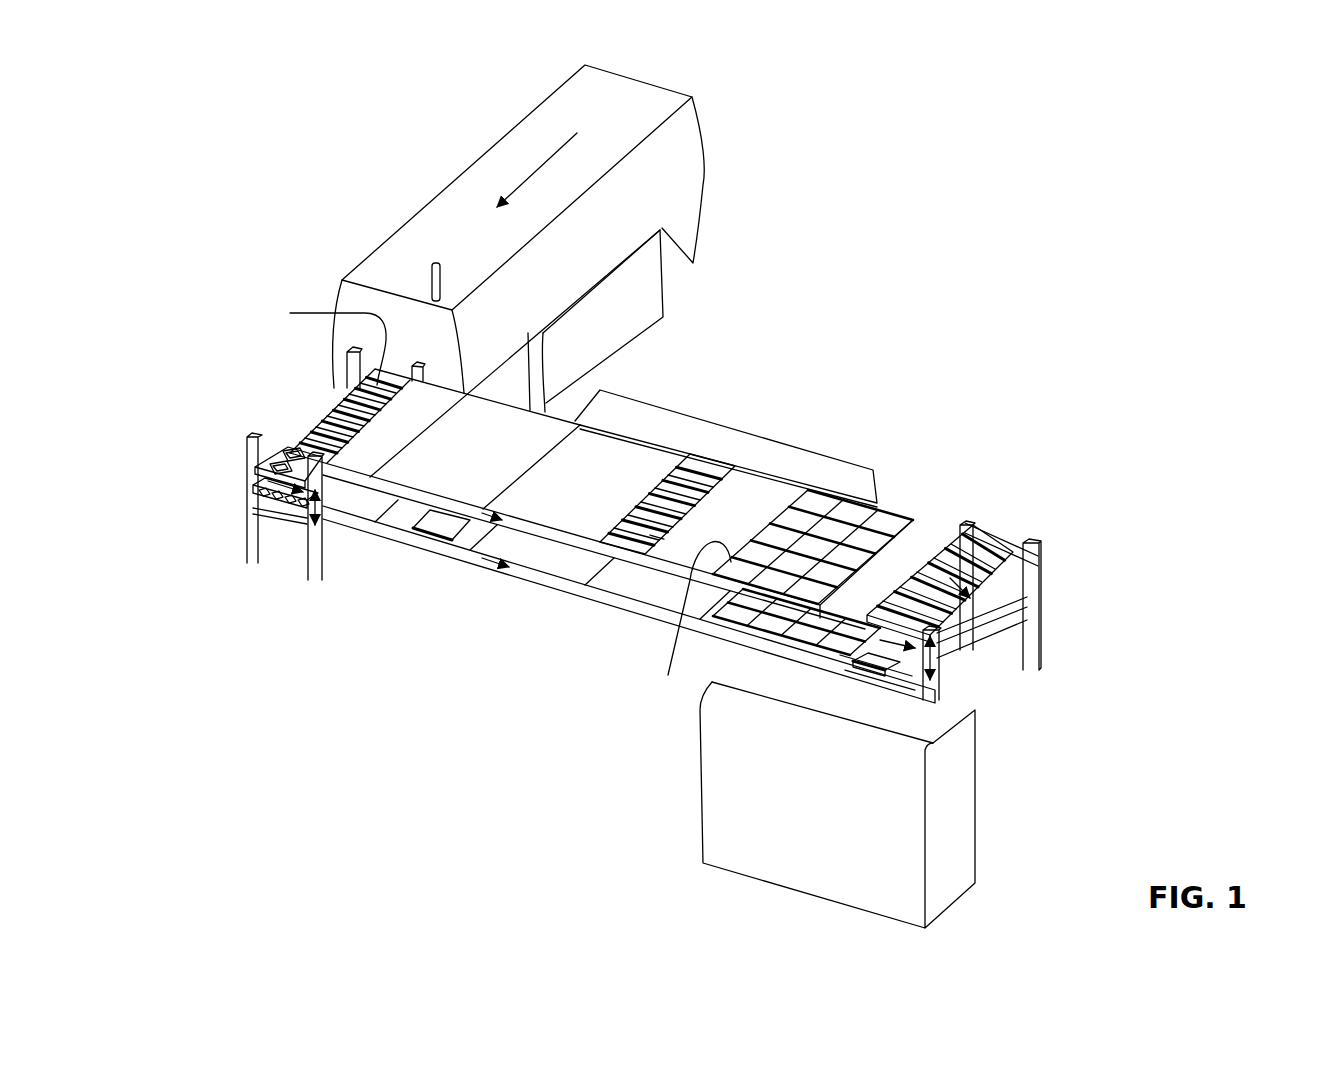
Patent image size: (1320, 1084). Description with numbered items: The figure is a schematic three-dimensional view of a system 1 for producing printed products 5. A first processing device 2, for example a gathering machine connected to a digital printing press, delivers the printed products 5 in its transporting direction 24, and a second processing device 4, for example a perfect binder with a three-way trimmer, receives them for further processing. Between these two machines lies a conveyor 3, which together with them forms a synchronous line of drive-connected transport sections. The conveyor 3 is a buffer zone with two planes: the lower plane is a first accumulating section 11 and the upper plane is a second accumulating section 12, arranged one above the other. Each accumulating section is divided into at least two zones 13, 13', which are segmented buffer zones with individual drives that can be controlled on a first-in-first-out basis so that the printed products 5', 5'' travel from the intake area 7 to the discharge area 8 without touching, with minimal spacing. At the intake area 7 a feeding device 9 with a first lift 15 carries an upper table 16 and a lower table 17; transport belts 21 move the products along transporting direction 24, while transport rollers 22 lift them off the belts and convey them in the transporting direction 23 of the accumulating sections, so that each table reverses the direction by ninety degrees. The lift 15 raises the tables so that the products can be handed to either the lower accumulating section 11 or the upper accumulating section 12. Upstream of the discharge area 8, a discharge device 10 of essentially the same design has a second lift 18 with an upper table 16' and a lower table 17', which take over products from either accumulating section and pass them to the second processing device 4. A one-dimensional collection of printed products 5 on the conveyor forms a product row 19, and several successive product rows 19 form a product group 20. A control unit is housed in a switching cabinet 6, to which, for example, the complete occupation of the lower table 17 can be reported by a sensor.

The system 1 is at (637, 357).
The first processing device 2 is at (428, 207).
The conveyor 3 is at (770, 497).
The second processing device 4 is at (972, 785).
The printed products 5 is at (340, 414).
The printed products 5' is at (413, 546).
The printed products 5'' is at (686, 462).
The switching cabinet 6 is at (757, 450).
The intake area 7 is at (325, 343).
The discharge area 8 is at (912, 692).
The feeding device 9 is at (235, 470).
The discharge device 10 is at (1000, 532).
The first accumulating section 11 is at (443, 557).
The second accumulating section 12 is at (550, 543).
The zone 13 is at (648, 615).
The zone 13' is at (590, 448).
The first lift 15 is at (248, 490).
The upper table 16 is at (266, 425).
The upper table 16' is at (1010, 583).
The lower table 17 is at (258, 550).
The lower table 17' is at (1044, 632).
The second lift 18 is at (1041, 565).
The product row 19 is at (657, 537).
The product group 20 is at (692, 621).
The transport belts 21 is at (298, 490).
The transport rollers 22 is at (307, 506).
The transporting direction 23 is at (471, 558).
The transporting direction 24 is at (533, 170).